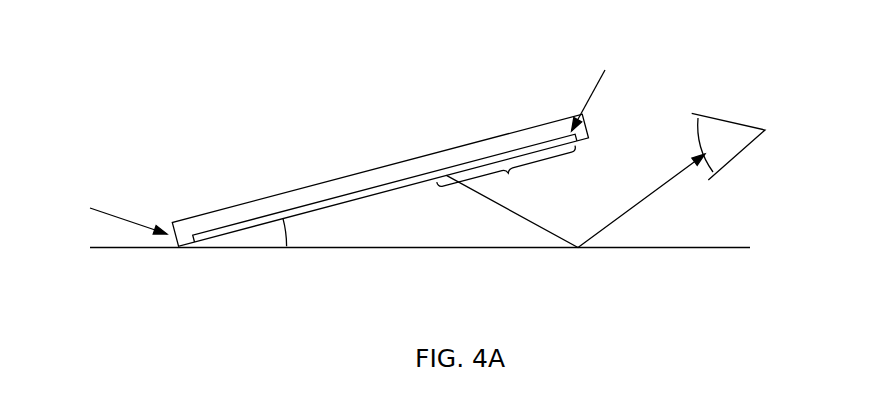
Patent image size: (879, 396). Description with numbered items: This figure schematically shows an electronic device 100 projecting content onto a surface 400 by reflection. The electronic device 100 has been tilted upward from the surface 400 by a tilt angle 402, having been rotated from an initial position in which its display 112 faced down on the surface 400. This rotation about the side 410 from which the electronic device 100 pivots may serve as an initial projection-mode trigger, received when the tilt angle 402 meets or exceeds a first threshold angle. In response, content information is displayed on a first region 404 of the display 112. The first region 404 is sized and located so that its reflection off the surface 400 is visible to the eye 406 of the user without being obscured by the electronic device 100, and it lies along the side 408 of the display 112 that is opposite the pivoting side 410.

The electronic device 100 is at (218, 214).
The display 112 is at (387, 191).
The surface 400 is at (152, 248).
The tilt angle 402 is at (287, 233).
The first region 404 is at (508, 173).
The eye 406 is at (720, 128).
The side 408 is at (604, 89).
The side 410 is at (106, 217).